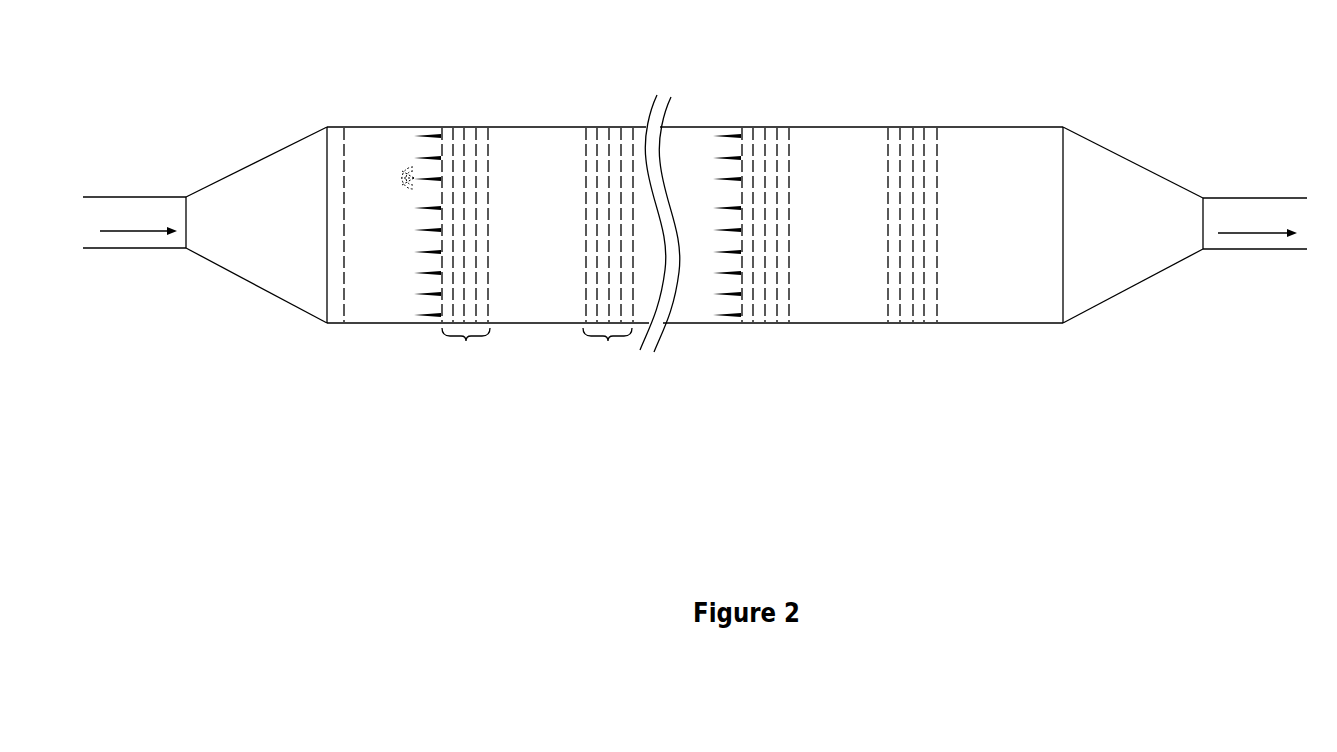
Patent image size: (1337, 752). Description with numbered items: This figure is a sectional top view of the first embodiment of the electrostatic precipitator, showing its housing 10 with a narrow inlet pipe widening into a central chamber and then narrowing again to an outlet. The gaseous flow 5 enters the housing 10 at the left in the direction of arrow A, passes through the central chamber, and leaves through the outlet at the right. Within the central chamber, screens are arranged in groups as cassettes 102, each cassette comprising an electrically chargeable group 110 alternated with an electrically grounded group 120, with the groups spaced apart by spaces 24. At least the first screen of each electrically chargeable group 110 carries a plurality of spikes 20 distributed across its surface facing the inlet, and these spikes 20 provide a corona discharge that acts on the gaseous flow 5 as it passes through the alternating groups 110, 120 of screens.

The housing 10 is at (314, 94).
The gaseous flow 5 is at (129, 222).
The spikes 20 is at (432, 316).
The spaces 24 is at (537, 304).
The cassettes 102 is at (537, 350).
The electrically chargeable groups 110 is at (452, 144).
The electrically grounded groups 120 is at (596, 144).